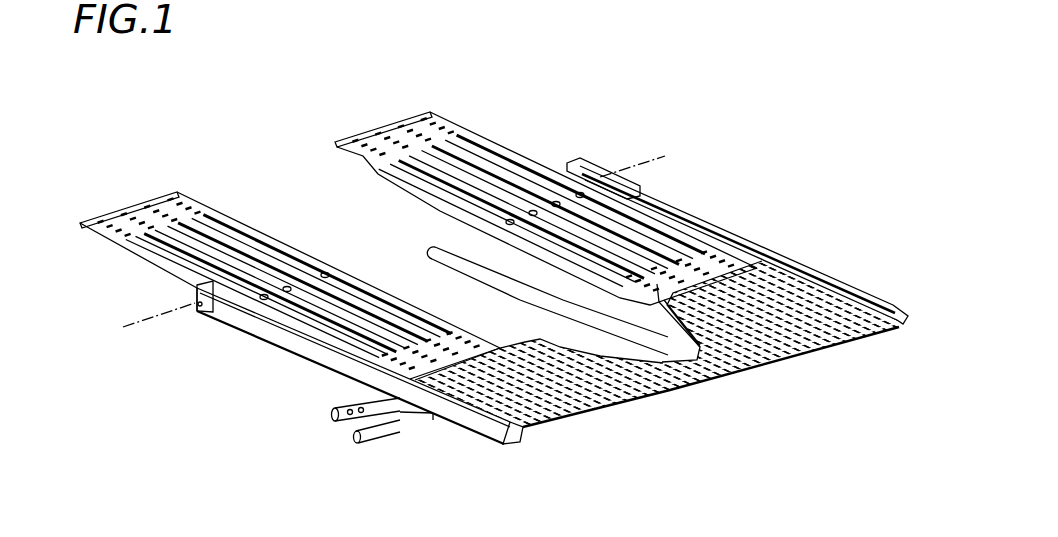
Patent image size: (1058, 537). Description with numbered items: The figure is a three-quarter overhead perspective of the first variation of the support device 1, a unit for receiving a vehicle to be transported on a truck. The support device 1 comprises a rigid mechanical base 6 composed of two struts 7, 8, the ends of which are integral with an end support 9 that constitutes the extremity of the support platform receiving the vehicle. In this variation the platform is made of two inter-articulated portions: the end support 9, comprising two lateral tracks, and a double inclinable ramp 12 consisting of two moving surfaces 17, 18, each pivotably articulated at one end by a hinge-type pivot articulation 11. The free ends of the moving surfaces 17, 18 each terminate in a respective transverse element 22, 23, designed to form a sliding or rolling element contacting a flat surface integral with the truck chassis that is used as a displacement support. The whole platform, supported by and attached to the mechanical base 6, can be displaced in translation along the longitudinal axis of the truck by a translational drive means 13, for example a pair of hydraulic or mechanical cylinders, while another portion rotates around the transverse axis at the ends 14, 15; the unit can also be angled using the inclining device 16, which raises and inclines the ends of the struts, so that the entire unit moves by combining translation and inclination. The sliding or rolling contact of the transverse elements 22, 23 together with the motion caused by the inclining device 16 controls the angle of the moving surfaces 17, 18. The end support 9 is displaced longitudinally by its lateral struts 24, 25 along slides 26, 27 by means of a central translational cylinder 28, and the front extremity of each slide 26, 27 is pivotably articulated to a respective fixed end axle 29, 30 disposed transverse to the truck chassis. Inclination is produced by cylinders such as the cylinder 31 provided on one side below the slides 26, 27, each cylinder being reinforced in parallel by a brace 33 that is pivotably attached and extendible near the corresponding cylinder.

The support device 1 is at (784, 162).
The rigid mechanical base 6 is at (621, 427).
The strut 7 is at (325, 351).
The strut 8 is at (744, 245).
The end support 9 is at (740, 382).
The hinge-type articulation 11 is at (708, 276).
The double inclinable ramp 12 is at (308, 178).
The translational drive means 13 is at (481, 260).
The end 14 is at (154, 336).
The end 15 is at (653, 144).
The inclining device 16 is at (319, 437).
The moving surface 17 is at (241, 218).
The moving surface 18 is at (487, 138).
The transverse element 22 is at (110, 205).
The transverse element 23 is at (382, 127).
The lateral strut 24 is at (530, 431).
The lateral strut 25 is at (900, 315).
The slide 26 is at (302, 362).
The slide 27 is at (780, 252).
The central translational cylinder 28 is at (446, 250).
The fixed end axle 29 is at (176, 311).
The fixed end axle 30 is at (676, 151).
The inclining cylinder 31 is at (323, 422).
The brace 33 is at (388, 413).